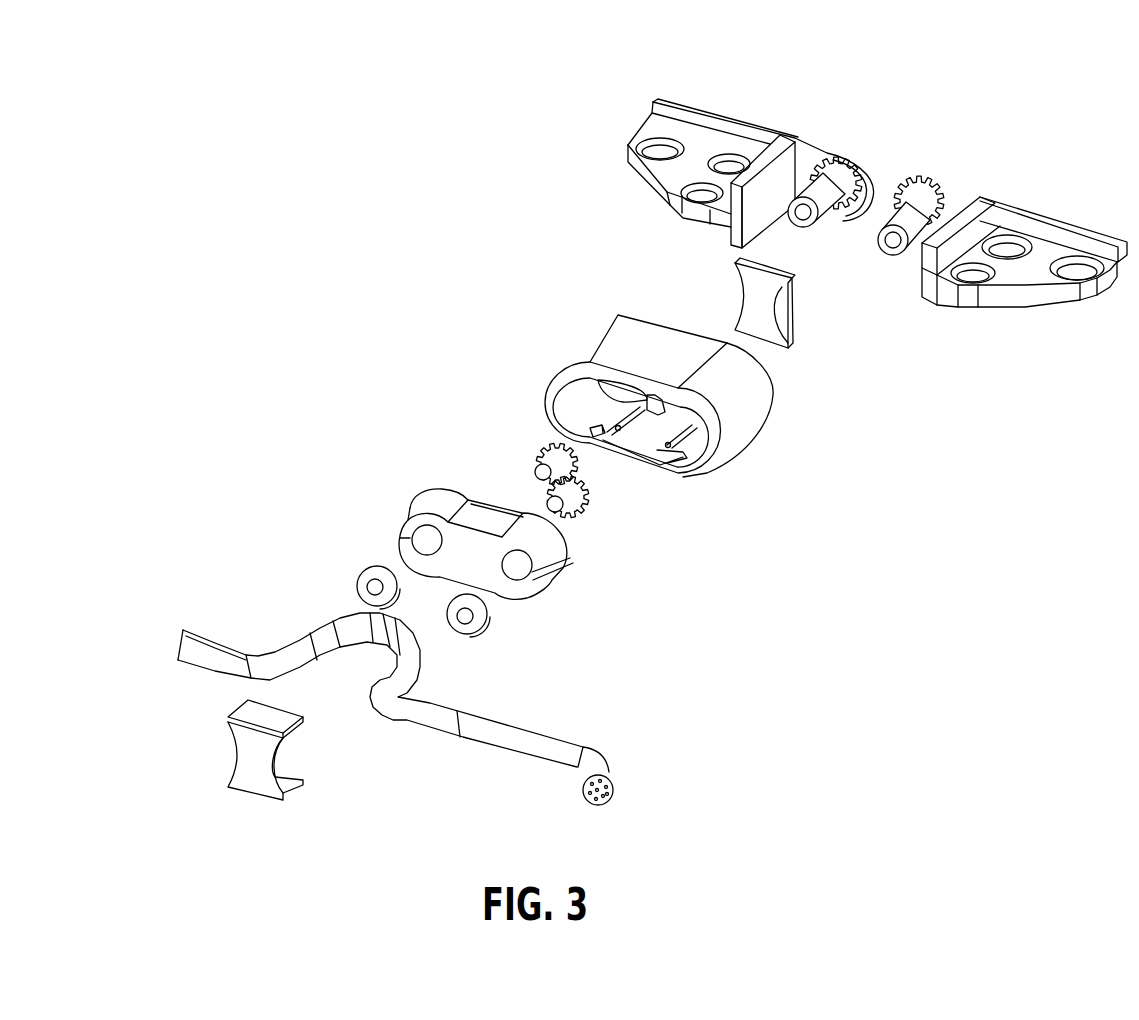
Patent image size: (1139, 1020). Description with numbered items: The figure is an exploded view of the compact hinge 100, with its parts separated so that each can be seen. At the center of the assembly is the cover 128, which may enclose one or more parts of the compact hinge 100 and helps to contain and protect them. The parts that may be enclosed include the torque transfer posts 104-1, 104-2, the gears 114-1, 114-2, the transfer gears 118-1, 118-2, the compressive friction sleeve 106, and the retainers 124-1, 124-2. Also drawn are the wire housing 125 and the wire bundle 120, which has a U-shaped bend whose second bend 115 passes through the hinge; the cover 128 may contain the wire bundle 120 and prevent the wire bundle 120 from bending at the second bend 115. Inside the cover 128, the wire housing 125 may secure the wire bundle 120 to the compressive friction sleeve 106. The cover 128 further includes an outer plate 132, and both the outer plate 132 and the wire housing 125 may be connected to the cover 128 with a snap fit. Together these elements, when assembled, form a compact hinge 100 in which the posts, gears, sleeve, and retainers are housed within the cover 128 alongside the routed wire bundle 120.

The compact hinge 100 is at (850, 40).
The torque transfer post 104-1 is at (824, 216).
The torque transfer post 104-2 is at (913, 238).
The compressive friction sleeve 106 is at (557, 557).
The gear 114-1 is at (848, 167).
The gear 114-2 is at (925, 185).
The second bend 115 is at (365, 654).
The transfer gear 118-1 is at (537, 463).
The transfer gear 118-2 is at (593, 502).
The wire bundle 120 is at (613, 797).
The retainer 124-1 is at (357, 583).
The retainer 124-2 is at (487, 627).
The wire housing 125 is at (253, 785).
The cover 128 is at (737, 417).
The outer plate 132 is at (770, 307).